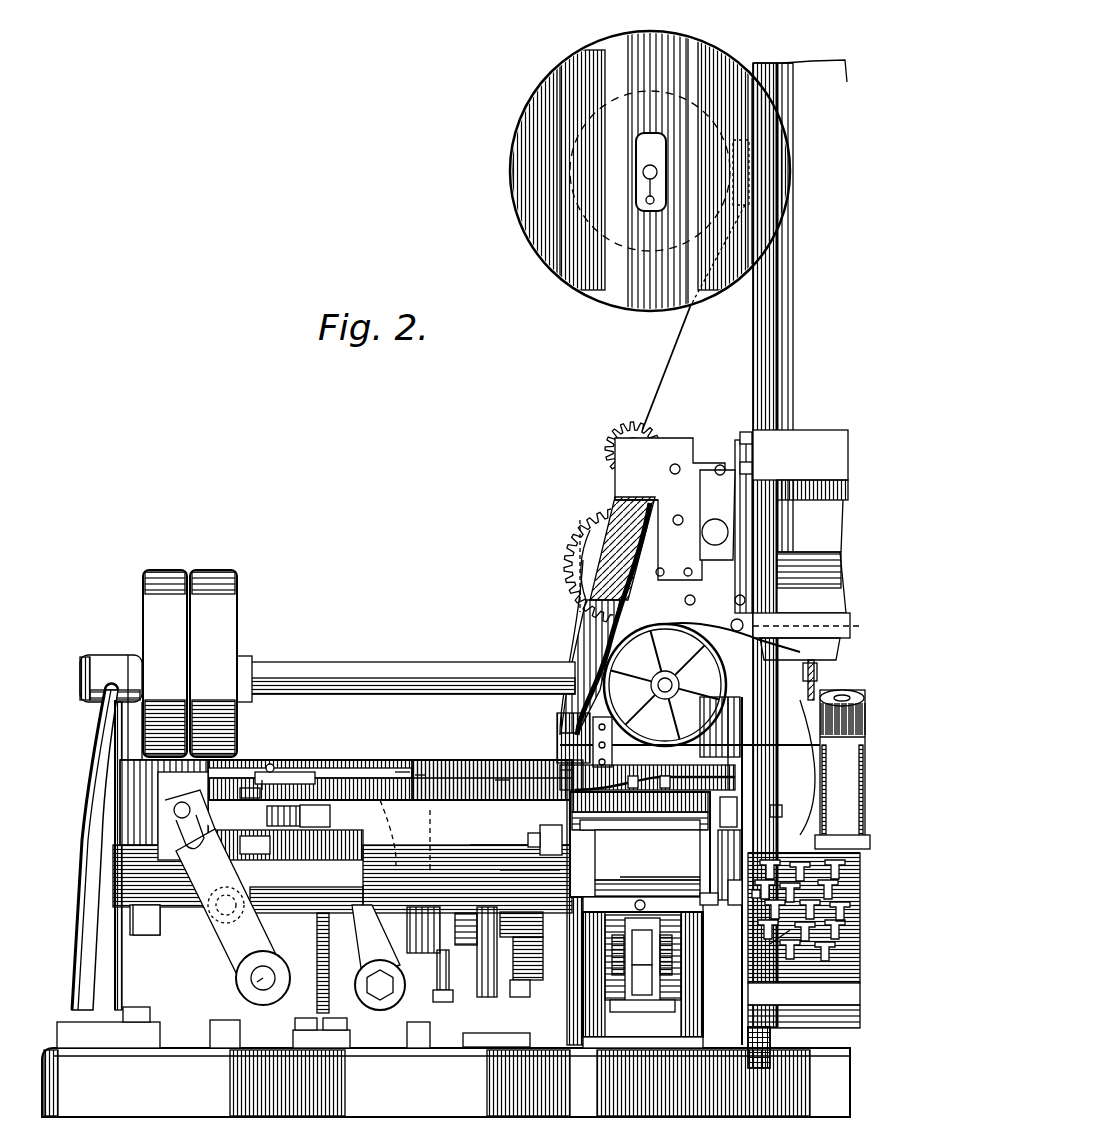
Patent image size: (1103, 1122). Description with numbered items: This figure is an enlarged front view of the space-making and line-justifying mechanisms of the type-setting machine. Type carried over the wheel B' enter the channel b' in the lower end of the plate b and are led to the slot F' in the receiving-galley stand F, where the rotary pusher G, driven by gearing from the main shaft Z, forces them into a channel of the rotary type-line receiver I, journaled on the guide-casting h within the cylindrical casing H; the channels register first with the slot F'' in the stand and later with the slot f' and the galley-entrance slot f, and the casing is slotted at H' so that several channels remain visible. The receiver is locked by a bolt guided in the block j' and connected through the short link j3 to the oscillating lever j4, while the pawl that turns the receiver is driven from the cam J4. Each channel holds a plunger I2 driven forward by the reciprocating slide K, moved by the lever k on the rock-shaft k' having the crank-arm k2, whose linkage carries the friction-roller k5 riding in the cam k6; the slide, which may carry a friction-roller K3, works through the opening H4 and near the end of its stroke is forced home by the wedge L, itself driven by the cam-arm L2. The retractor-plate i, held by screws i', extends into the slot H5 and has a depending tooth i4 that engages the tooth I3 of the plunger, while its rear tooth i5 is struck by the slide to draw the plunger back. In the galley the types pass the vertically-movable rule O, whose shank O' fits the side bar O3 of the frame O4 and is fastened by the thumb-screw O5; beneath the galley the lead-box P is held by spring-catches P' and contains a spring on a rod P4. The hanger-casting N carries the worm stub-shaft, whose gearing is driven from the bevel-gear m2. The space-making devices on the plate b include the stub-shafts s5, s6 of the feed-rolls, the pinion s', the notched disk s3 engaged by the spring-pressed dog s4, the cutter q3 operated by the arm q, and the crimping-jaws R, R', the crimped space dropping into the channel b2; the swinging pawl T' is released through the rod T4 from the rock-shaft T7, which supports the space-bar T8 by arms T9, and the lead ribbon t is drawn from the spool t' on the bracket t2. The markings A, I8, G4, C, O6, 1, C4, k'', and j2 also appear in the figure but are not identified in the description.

The upright standard A is at (782, 565).
The spool t' is at (651, 183).
The bracket t2 is at (733, 160).
The lead ribbon t is at (692, 320).
The stub-shaft s5 is at (633, 430).
The pinion s' is at (613, 438).
The notched disk s3 is at (612, 460).
The stub-shaft s6 is at (657, 450).
The spring-pressed dog s4 is at (630, 470).
The movable crimping-jaw R' is at (680, 521).
The stationary crimping-jaw R is at (607, 513).
The arm q is at (572, 560).
The cutter q3 is at (578, 588).
The channel b2 is at (585, 622).
The plate b is at (593, 619).
The channel b' is at (722, 606).
The wheel B' is at (661, 693).
The swinging pawl T' is at (807, 636).
The main shaft Z is at (390, 671).
The tooth i5 is at (190, 663).
The slide K is at (90, 790).
The friction-roller K3 is at (128, 820).
The rotary type-line receiver I is at (460, 772).
The plunger I2 is at (275, 780).
The wedge L is at (292, 806).
The screws i' is at (258, 751).
The retractor-plate i is at (266, 763).
The slot H5 is at (400, 770).
The tooth i4 is at (420, 775).
The slot H' is at (505, 758).
The slot F'' is at (550, 752).
The tooth I3 is at (246, 795).
The guide-casting h is at (317, 822).
The lever I8 is at (432, 830).
The casing H is at (510, 842).
The plate G4 is at (515, 845).
The slot f' is at (536, 830).
The pusher G is at (640, 843).
The cutter bar C is at (640, 821).
The receiving-galley stand F is at (647, 850).
The lead-box P is at (647, 875).
The rod P4 is at (660, 864).
The spring-catches P' is at (678, 881).
The thumb-screw O5 is at (627, 768).
The frame O4 is at (702, 923).
The rule O is at (660, 947).
The shank O' is at (669, 980).
The side bar O3 is at (642, 1007).
The slot F' is at (712, 974).
The bevel-gear m2 is at (817, 673).
The hanger-casting N is at (842, 769).
The rod T4 is at (782, 810).
The rod O6 is at (801, 767).
The rock-shaft T7 is at (730, 827).
The space-bar T8 is at (804, 844).
The arms T9 is at (804, 940).
The pin 1 is at (760, 892).
The tack C4 is at (773, 943).
The slot f is at (740, 901).
The lever k is at (223, 889).
The opening H4 is at (156, 920).
The crank-arm k2 is at (214, 930).
The rock-shaft k' is at (243, 978).
The roller pin k'' is at (232, 993).
The cam-arm L2 is at (330, 986).
The friction-roller k5 is at (406, 940).
The link j3 is at (462, 998).
The oscillating lever j4 is at (498, 995).
The block j2 is at (543, 940).
The block j' is at (537, 961).
The cam J4 is at (530, 995).
The cam k6 is at (446, 1082).